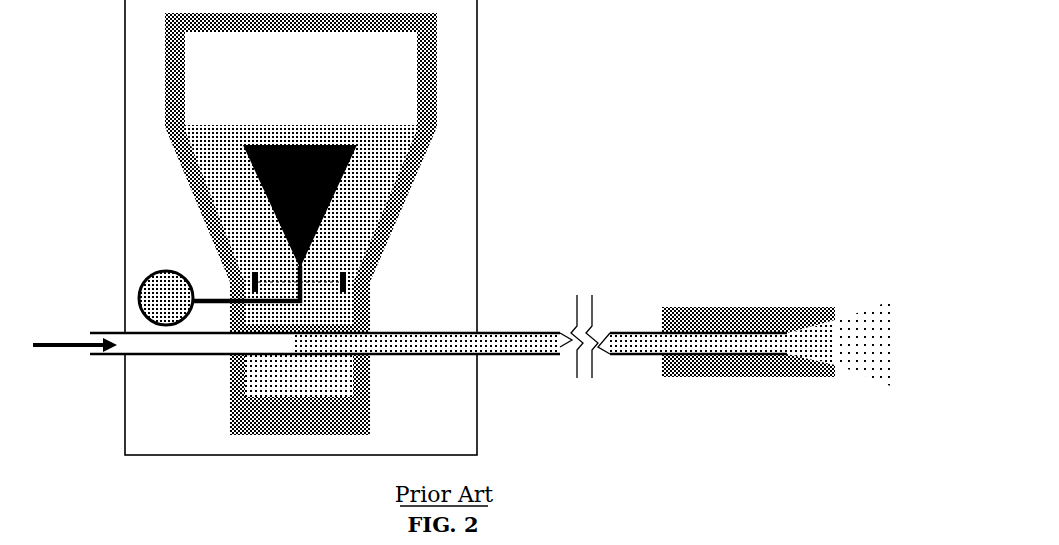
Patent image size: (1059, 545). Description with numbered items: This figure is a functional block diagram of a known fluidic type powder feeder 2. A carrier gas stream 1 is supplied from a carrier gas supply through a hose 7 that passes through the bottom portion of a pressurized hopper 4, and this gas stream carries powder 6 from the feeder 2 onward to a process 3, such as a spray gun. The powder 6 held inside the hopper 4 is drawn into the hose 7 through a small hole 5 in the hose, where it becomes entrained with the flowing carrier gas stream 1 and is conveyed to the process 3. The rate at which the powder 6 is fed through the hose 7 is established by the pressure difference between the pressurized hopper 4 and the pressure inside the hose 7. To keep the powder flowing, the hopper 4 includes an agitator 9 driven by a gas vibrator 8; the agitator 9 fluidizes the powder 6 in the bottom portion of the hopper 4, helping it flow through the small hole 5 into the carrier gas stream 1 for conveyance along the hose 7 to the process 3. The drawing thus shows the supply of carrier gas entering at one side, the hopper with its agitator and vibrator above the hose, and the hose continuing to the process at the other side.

The carrier gas stream 1 is at (75, 337).
The feeder 2 is at (124, 118).
The process 3 is at (700, 305).
The pressurized hopper 4 is at (165, 70).
The small hole 5 is at (300, 336).
The powder 6 is at (250, 240).
The hose 7 is at (497, 355).
The gas vibrator 8 is at (138, 298).
The agitator 9 is at (268, 210).